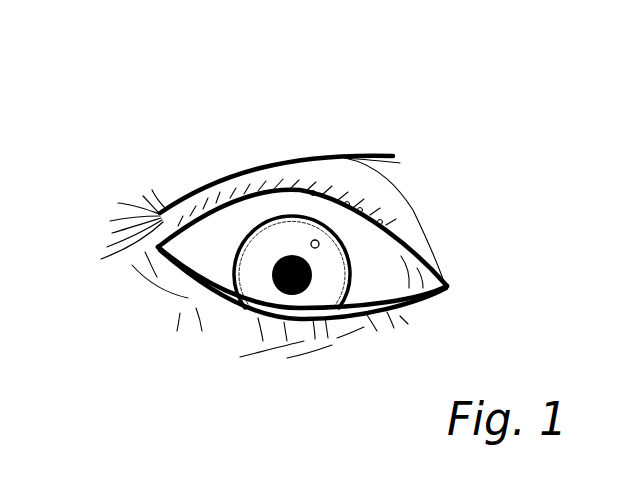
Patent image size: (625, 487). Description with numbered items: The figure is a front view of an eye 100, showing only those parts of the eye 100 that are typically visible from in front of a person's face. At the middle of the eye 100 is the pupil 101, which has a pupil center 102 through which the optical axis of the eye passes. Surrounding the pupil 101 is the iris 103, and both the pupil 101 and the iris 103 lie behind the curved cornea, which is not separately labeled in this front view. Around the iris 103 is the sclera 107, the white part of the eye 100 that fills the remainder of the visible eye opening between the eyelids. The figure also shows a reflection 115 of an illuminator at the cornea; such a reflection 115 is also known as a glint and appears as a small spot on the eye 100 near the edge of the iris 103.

The eye 100 is at (174, 139).
The pupil 101 is at (308, 290).
The pupil center 102 is at (292, 277).
The iris 103 is at (268, 250).
The sclera 107 is at (363, 265).
The reflection of an illuminator 115 is at (318, 241).